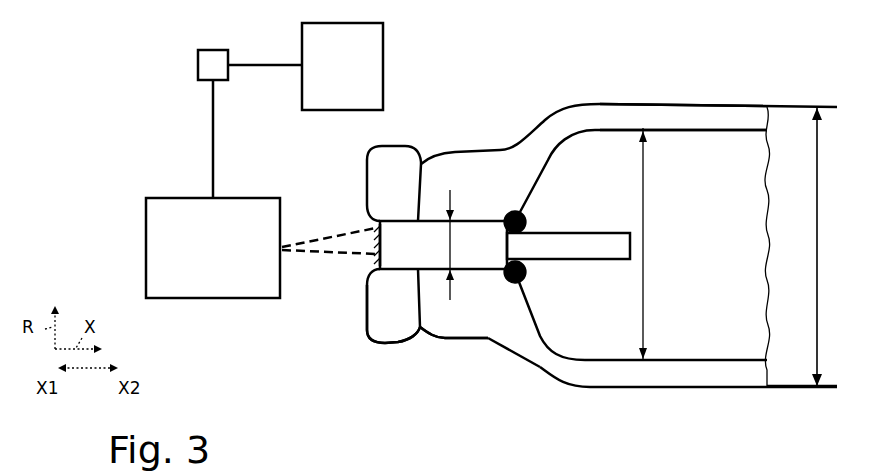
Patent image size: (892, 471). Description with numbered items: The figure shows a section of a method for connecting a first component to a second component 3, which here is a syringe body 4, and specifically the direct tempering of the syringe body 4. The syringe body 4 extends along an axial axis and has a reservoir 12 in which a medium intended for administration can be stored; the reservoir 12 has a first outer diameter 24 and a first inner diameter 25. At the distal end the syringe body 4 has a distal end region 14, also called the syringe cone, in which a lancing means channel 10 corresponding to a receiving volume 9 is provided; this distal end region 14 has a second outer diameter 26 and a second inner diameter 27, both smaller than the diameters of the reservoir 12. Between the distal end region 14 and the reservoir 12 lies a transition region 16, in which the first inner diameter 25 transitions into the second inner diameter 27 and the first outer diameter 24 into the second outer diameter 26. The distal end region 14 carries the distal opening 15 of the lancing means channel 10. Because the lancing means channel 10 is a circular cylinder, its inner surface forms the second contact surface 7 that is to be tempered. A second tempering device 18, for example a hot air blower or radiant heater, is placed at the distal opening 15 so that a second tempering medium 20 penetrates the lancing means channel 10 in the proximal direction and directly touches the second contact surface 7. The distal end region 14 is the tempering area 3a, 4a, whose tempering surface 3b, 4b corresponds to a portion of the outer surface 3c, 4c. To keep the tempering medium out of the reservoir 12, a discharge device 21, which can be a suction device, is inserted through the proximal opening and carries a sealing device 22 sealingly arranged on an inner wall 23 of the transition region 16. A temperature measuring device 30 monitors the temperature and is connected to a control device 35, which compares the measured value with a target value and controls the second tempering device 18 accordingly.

The control device 35 is at (210, 50).
The temperature measuring device 30 is at (301, 45).
The second tempering device 18 is at (191, 198).
The second tempering medium 20 is at (312, 251).
The distal opening 15 is at (372, 264).
The receiving volume 9 is at (443, 175).
The lancing means channel 10 is at (432, 220).
The distal end region 14 is at (425, 161).
The second inner diameter 27 is at (473, 148).
The inner wall 23 is at (533, 168).
The reservoir 12 is at (707, 147).
The discharge device 21 is at (612, 262).
The sealing device 22 is at (522, 282).
The second component 3 is at (404, 317).
The syringe body 4 is at (441, 330).
The second outer diameter 26 is at (470, 346).
The second contact surface 7 is at (489, 272).
The transition region 16 is at (531, 352).
The tempering area 3a is at (392, 357).
The tempering surface 3b is at (392, 357).
The outer surface 3c is at (392, 357).
The tempering area 4a is at (392, 357).
The tempering surface 4b is at (392, 357).
The outer surface 4c is at (482, 342).
The first inner diameter 25 is at (643, 128).
The first outer diameter 24 is at (820, 220).